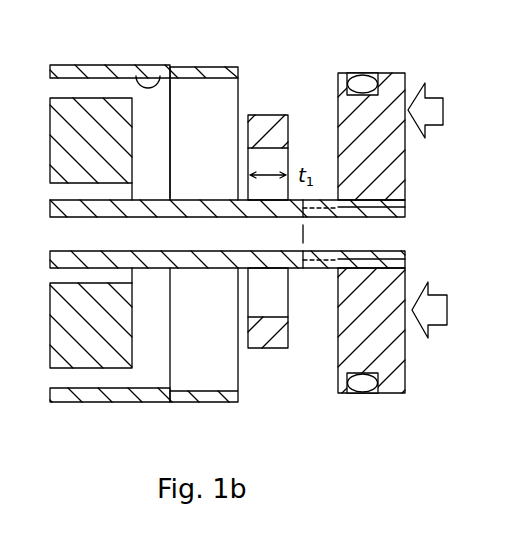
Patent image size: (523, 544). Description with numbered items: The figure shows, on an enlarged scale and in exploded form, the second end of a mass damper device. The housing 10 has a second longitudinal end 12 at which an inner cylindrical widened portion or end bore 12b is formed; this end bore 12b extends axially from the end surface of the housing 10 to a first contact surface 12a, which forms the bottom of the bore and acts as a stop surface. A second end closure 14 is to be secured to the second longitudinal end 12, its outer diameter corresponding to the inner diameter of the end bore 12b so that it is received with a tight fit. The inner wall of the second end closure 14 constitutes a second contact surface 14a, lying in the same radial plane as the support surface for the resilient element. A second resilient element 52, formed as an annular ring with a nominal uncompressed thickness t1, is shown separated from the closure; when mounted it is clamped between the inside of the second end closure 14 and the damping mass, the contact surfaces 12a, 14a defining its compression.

The housing 10 is at (84, 66).
The second longitudinal end 12 is at (245, 66).
The first contact surface 12a is at (175, 78).
The end bore 12b is at (148, 76).
The second end closure 14 is at (383, 73).
The second contact surface 14a is at (338, 89).
The second resilient element 52 is at (262, 349).